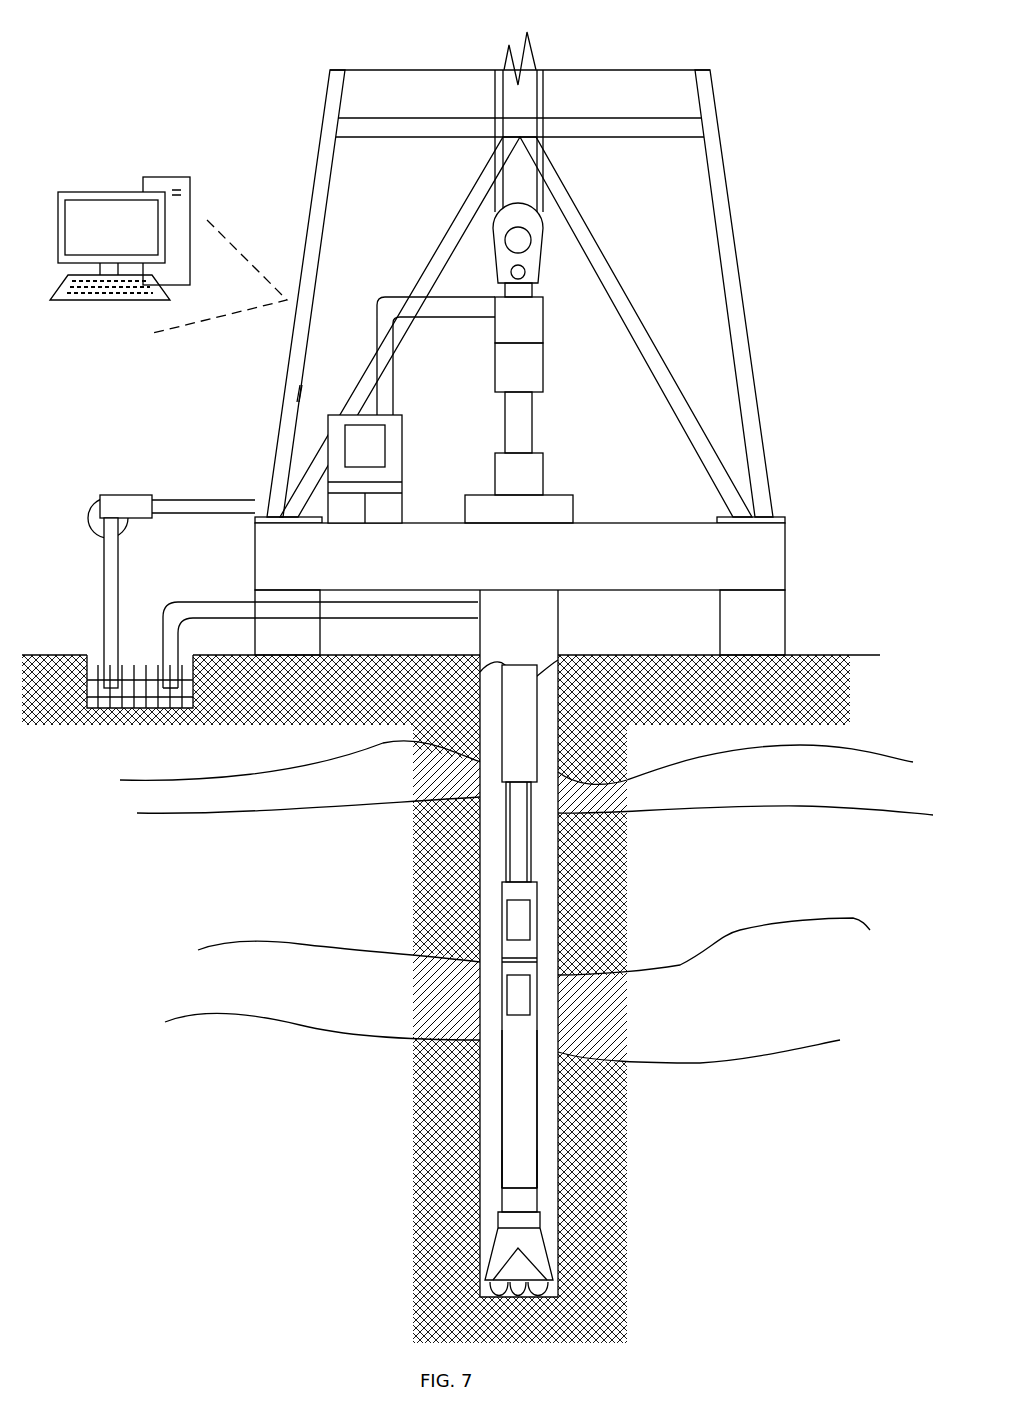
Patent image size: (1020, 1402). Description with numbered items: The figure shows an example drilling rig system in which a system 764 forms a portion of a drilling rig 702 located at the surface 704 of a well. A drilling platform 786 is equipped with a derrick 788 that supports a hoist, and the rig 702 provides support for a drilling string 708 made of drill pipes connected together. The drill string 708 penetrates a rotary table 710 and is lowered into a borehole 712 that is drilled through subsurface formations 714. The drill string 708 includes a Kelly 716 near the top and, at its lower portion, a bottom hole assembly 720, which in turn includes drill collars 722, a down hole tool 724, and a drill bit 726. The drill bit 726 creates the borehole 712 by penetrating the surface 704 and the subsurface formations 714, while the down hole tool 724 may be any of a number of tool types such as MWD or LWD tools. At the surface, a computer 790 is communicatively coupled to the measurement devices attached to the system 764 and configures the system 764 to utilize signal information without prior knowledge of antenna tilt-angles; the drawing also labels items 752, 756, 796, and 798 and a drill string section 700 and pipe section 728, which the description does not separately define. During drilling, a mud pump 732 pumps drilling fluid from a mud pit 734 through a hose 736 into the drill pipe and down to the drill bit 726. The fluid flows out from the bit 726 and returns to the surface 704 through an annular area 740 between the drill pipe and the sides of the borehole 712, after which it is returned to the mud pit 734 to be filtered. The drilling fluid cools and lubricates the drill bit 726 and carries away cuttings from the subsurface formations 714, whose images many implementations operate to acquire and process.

The drilling system / drill string 700 is at (404, 398).
The drilling rig 702 is at (760, 342).
The surface 704 is at (835, 655).
The drilling string 708 is at (541, 1118).
The rotary table 710 is at (573, 510).
The borehole 712 is at (550, 1170).
The subsurface formations 714 is at (122, 1058).
The Kelly 716 is at (533, 421).
The bottom hole assembly 720 is at (410, 1273).
The drill collars 722 is at (540, 742).
The down hole tool 724 is at (525, 1177).
The drill bit 726 is at (532, 1248).
The drill pipe section 728 is at (531, 852).
The mud pump 732 is at (104, 496).
The mud pit 734 is at (145, 693).
The hose 736 is at (218, 500).
The annular area 740 is at (548, 888).
The sensor 752 is at (290, 393).
The sensor 756 is at (290, 393).
The system 764 is at (215, 80).
The drilling platform 786 is at (785, 535).
The derrick 788 is at (730, 212).
The computer 790 is at (93, 182).
The drawworks 796 is at (402, 452).
The swivel 798 is at (543, 470).